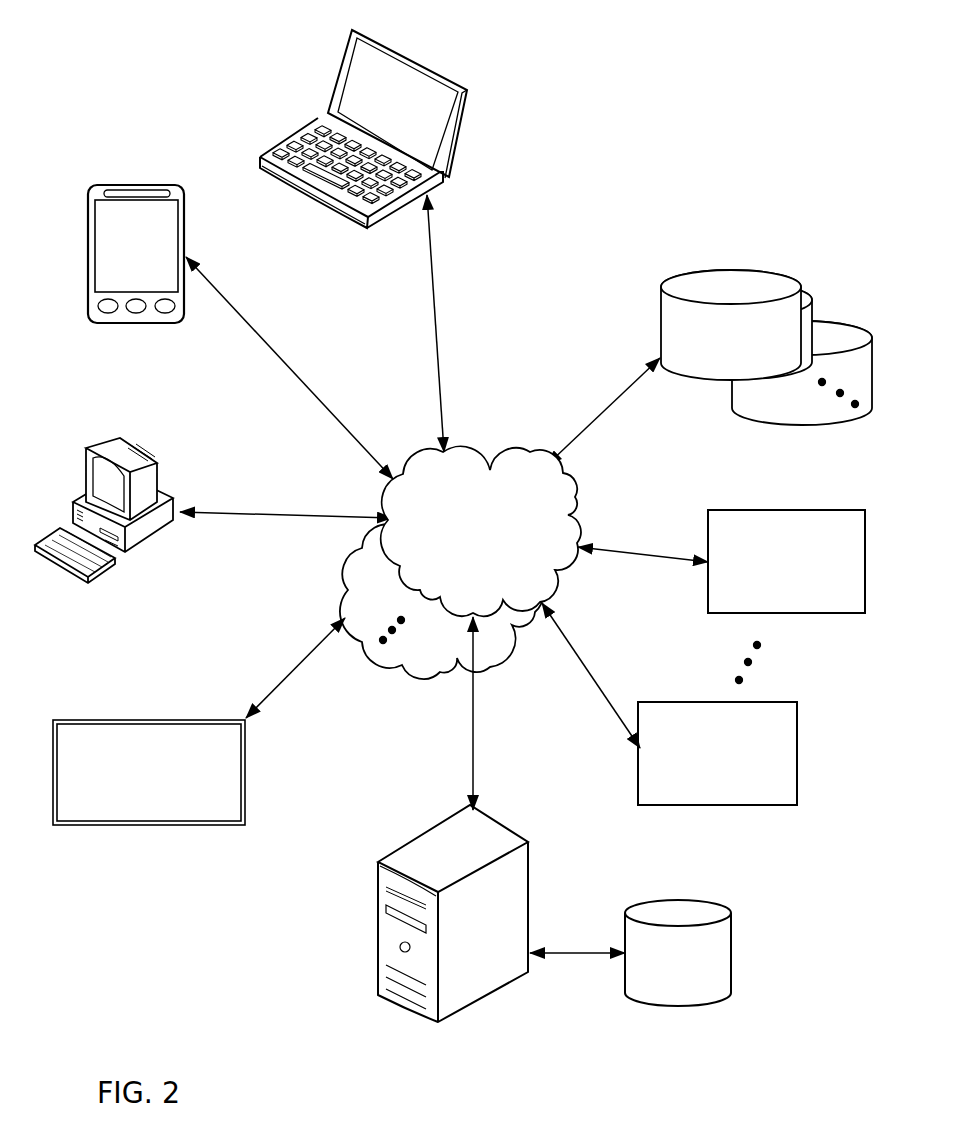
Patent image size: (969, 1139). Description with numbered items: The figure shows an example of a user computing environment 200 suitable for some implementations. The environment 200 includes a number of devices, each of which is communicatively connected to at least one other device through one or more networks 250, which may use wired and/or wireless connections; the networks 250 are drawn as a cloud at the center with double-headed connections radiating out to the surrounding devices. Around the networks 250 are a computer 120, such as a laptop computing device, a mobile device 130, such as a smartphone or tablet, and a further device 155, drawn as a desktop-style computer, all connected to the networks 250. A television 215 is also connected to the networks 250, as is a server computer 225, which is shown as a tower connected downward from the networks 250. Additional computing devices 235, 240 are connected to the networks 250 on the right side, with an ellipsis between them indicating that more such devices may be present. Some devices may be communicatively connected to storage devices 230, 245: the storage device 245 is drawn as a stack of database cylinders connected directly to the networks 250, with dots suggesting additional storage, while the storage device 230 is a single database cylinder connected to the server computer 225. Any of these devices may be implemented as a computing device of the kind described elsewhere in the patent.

The user computing environment 200 is at (680, 75).
The computer 120 is at (409, 112).
The mobile device 130 is at (152, 261).
The device 155 is at (87, 460).
The networks 250 is at (497, 566).
The storage device 245 is at (747, 346).
The computing device 240 is at (806, 562).
The computing device 235 is at (736, 770).
The television 215 is at (165, 782).
The server computer 225 is at (492, 944).
The storage device 230 is at (700, 971).